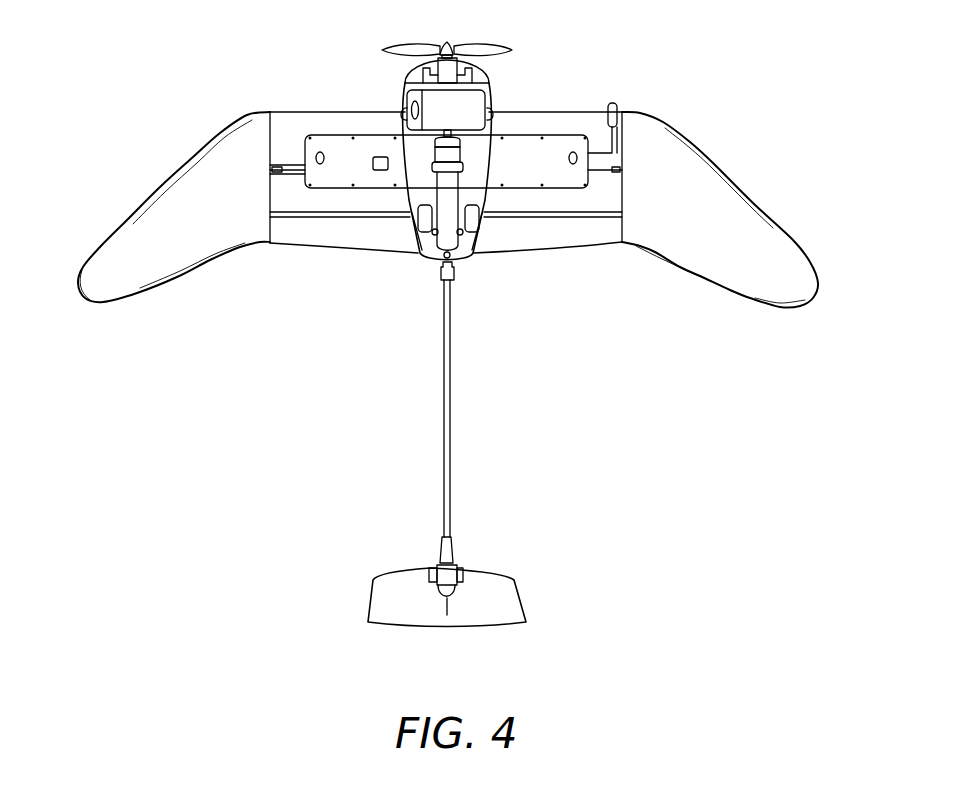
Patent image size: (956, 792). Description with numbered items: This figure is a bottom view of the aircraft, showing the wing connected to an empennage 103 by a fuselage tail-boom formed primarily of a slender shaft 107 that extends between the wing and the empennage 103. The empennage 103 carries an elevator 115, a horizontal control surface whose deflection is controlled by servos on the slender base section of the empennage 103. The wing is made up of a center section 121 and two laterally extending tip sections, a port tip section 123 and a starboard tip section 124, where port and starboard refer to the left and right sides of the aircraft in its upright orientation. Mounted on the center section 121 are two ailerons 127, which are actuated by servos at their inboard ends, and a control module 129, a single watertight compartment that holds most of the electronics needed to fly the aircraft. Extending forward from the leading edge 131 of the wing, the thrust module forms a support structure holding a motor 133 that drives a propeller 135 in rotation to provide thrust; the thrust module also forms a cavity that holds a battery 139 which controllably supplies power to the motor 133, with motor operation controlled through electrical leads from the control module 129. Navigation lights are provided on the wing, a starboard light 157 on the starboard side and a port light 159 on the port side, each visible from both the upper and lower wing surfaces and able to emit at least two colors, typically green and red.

The empennage 103 is at (453, 562).
The slender shaft 107 is at (443, 415).
The elevator 115 is at (407, 620).
The center section 121 is at (518, 200).
The port tip section 123 is at (740, 210).
The starboard tip section 124 is at (188, 190).
The ailerons 127 is at (332, 242).
The control module 129 is at (340, 153).
The leading edge 131 is at (562, 110).
The motor 133 is at (450, 68).
The propeller 135 is at (405, 48).
The battery 139 is at (473, 102).
The starboard light 157 is at (320, 152).
The port light 159 is at (577, 151).